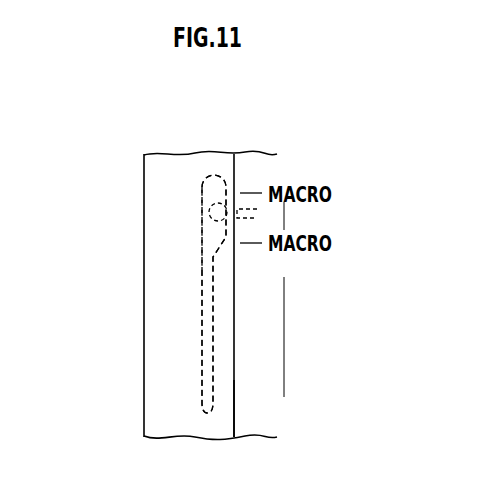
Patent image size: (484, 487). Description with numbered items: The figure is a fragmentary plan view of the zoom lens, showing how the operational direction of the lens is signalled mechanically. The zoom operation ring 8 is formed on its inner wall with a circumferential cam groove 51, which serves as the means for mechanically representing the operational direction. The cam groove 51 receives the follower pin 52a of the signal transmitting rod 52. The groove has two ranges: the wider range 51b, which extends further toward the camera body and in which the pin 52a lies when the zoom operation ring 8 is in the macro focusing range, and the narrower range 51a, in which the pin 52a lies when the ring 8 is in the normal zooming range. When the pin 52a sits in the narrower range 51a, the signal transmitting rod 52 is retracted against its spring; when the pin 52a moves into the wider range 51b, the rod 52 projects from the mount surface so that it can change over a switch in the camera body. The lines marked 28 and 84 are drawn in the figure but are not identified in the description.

The zoom operation ring 8 is at (177, 172).
The dividing line 28 is at (240, 265).
The line 84 is at (240, 408).
The cam groove 51 is at (88, 227).
The wider range of the cam groove 51b is at (226, 238).
The narrower range of the cam groove 51a is at (204, 292).
The signal transmitting rod 52 is at (248, 204).
The follower pin 52a is at (209, 210).